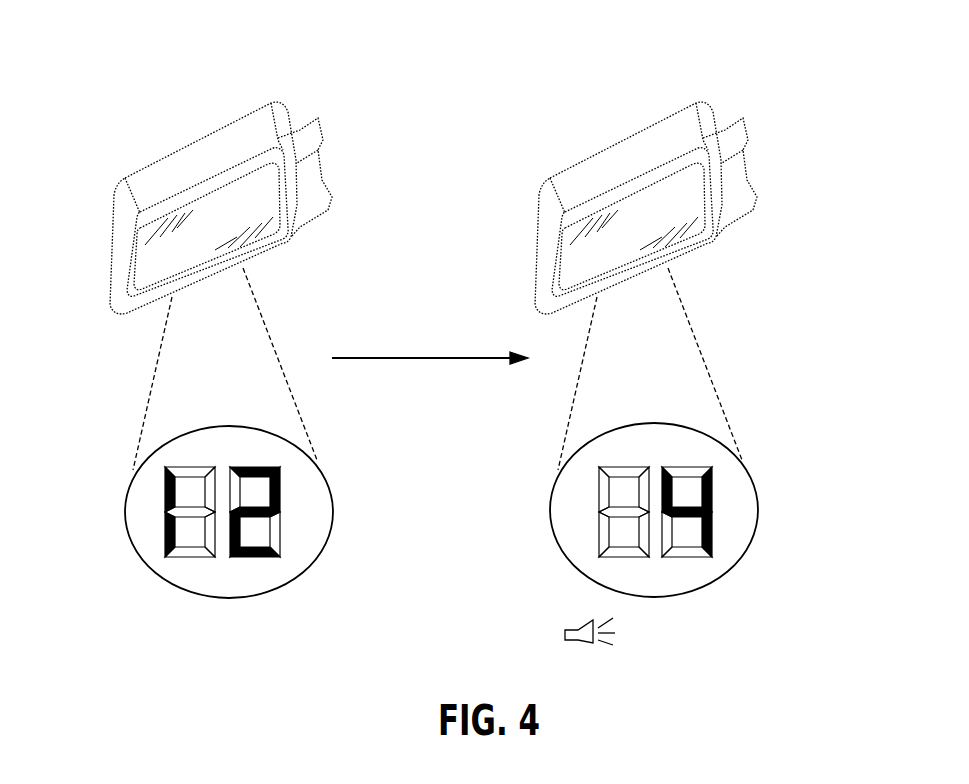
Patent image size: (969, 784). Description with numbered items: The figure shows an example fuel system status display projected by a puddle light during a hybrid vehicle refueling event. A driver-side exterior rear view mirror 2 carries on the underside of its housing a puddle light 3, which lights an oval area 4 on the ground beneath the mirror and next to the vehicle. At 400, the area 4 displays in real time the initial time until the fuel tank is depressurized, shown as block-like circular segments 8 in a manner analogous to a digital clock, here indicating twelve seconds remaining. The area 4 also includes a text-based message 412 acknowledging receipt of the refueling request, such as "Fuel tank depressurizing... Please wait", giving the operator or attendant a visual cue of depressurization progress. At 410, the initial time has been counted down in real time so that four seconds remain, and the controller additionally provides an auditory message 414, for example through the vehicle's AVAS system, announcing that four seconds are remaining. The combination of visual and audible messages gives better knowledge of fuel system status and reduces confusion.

The driver-side exterior rear view mirror 2 is at (221, 112).
The puddle light 3 is at (218, 277).
The area 4 is at (317, 460).
The block-like circular segments 8 is at (303, 507).
The initial time display state 400 is at (319, 78).
The countdown display state 410 is at (790, 75).
The text-based message 412 is at (372, 615).
The auditory message 414 is at (779, 623).